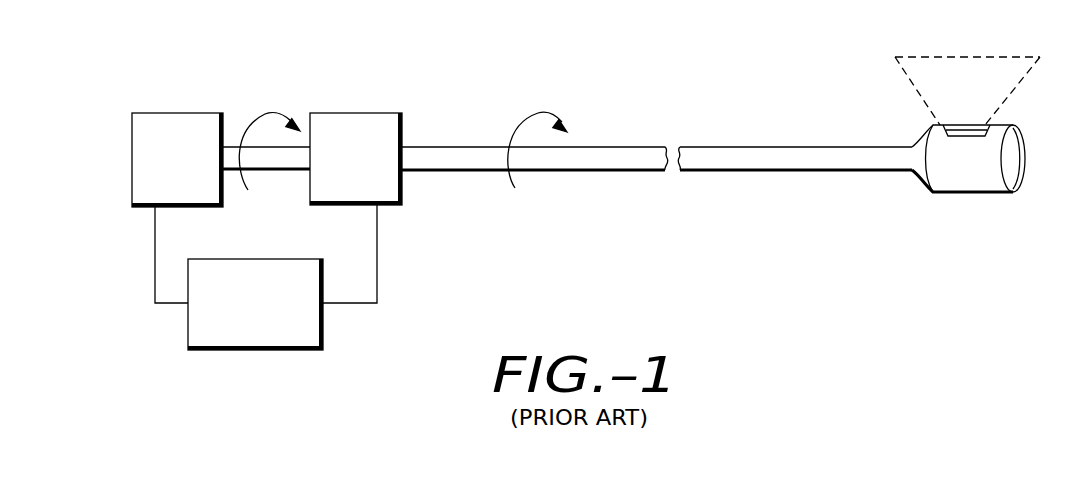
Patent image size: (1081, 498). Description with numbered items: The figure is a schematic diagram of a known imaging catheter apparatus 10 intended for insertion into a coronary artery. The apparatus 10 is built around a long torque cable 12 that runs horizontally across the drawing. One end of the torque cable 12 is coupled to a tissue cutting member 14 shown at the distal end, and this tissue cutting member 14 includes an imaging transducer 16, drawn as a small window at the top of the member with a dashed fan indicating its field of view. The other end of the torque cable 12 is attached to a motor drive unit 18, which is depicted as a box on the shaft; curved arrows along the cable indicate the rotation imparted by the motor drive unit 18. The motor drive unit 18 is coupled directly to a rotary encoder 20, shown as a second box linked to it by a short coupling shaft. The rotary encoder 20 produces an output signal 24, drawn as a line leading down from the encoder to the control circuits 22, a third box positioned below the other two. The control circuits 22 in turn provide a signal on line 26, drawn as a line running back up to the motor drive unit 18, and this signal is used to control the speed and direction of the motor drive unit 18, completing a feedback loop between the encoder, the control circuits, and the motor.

The imaging catheter apparatus 10 is at (800, 247).
The torque cable 12 is at (752, 157).
The tissue cutting member 14 is at (978, 177).
The imaging transducer 16 is at (985, 128).
The motor drive unit 18 is at (366, 127).
The rotary encoder 20 is at (177, 128).
The control circuits 22 is at (262, 332).
The output signal 24 is at (155, 253).
The line 26 is at (378, 235).